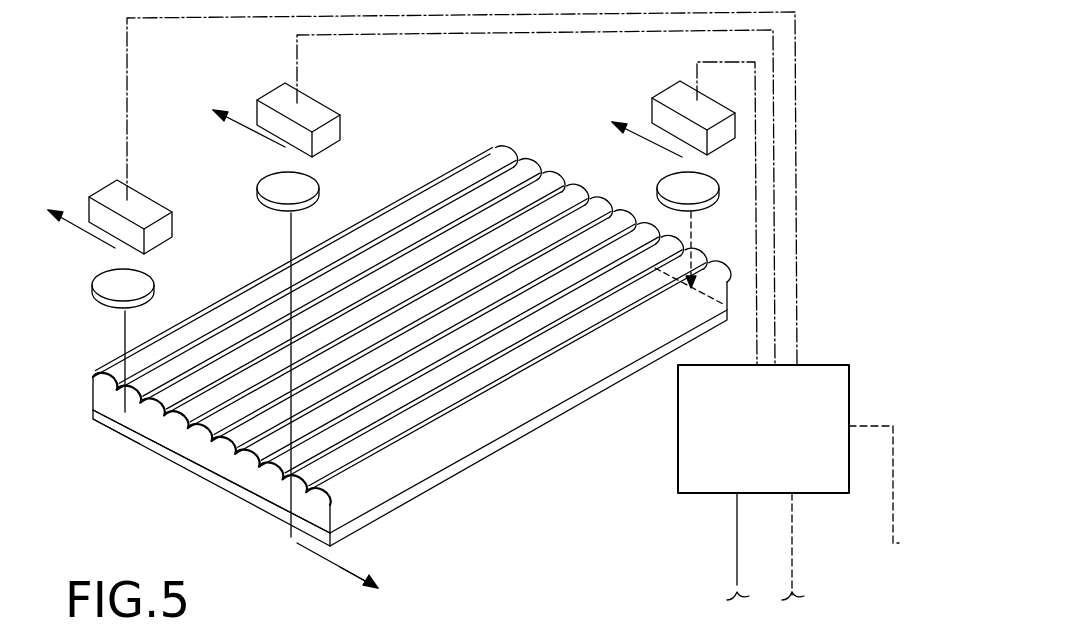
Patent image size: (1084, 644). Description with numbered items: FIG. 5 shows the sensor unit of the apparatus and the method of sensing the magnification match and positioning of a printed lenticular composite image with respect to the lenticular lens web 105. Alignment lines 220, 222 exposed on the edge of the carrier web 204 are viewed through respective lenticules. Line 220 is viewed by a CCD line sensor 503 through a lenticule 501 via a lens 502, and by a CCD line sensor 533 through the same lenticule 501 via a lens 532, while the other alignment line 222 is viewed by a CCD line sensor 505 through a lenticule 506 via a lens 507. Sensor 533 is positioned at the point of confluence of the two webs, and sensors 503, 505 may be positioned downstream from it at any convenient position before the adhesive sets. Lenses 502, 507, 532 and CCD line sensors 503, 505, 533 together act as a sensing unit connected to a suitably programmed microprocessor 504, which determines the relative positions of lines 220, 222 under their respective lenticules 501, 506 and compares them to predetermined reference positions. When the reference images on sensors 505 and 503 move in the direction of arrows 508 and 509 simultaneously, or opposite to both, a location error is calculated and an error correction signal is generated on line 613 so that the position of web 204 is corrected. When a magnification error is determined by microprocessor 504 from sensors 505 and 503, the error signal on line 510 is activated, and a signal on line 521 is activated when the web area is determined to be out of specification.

The lenticule 501 is at (523, 393).
The lens 502 is at (267, 185).
The CCD line sensor 503 is at (315, 110).
The microprocessor 504 is at (817, 363).
The CCD line sensor 505 is at (192, 175).
The lenticule 506 is at (480, 160).
The lens 507 is at (157, 290).
The arrow 508 is at (53, 207).
The arrow 509 is at (213, 108).
The line 510 is at (370, 575).
The line 521 is at (858, 422).
The lens 532 is at (657, 192).
The CCD line sensor 533 is at (653, 103).
The lenticular lens web 105 is at (217, 462).
The carrier web 204 is at (257, 503).
The alignment line 220 is at (290, 533).
The alignment line 222 is at (127, 422).
The line 613 is at (737, 563).